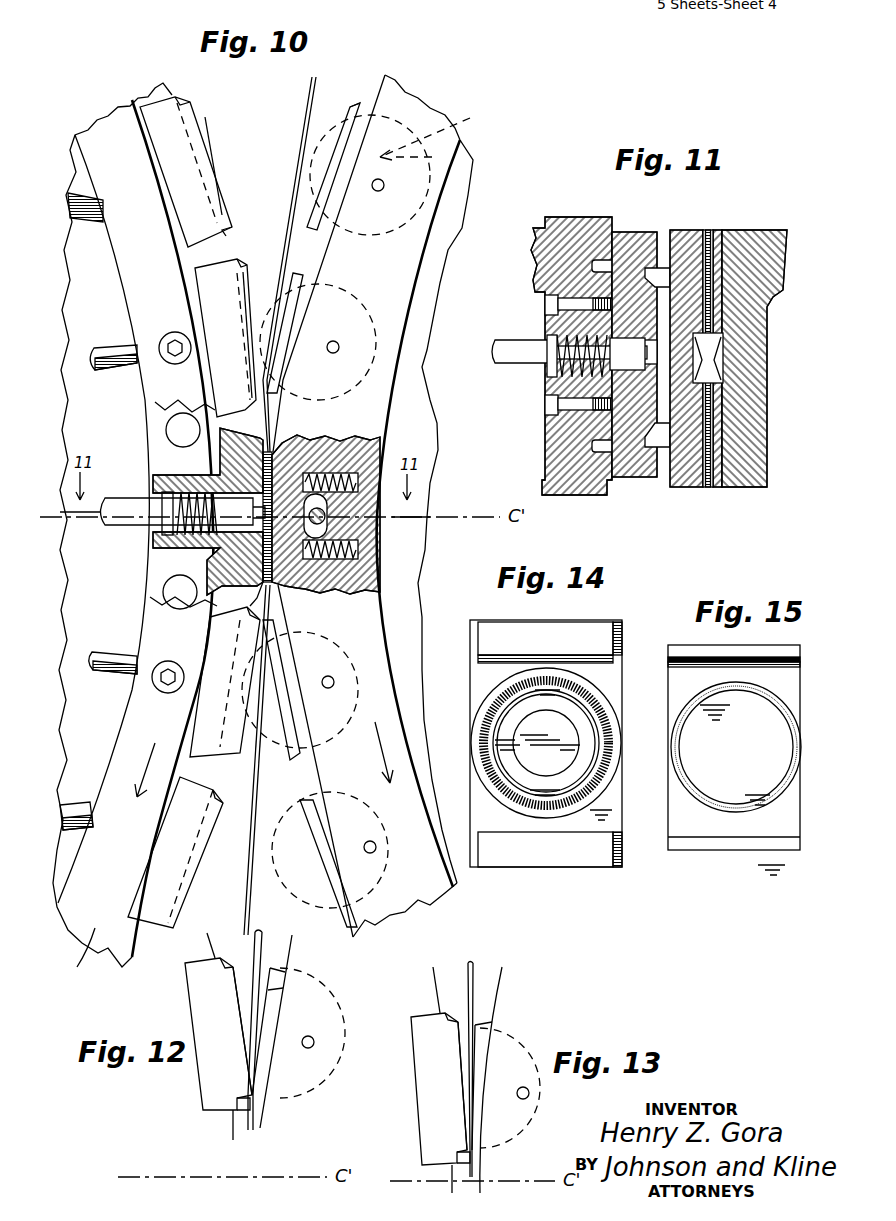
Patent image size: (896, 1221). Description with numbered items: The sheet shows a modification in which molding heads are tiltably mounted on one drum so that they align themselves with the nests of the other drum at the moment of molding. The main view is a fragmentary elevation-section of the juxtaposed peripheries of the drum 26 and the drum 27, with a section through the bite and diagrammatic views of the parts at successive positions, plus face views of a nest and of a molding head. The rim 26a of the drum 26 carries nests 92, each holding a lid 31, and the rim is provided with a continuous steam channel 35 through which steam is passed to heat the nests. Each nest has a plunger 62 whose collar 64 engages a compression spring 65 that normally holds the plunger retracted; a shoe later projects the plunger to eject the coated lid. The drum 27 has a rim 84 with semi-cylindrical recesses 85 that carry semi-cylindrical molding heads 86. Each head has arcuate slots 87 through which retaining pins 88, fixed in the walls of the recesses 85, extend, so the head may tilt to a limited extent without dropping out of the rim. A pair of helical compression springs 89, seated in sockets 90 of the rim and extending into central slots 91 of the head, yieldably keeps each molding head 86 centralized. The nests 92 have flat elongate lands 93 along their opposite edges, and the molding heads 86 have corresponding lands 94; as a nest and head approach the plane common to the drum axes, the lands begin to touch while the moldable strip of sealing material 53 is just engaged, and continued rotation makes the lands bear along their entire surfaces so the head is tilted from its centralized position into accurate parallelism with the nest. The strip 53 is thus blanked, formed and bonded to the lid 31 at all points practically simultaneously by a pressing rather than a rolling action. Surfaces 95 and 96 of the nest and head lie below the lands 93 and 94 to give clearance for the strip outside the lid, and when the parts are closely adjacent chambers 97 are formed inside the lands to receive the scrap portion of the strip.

In FIG. 10, the drum 26 is at (78, 366).
In FIG. 11, the drum 26 is at (532, 225).
In FIG. 12, the drum 26 is at (233, 1128).
In FIG. 13, the drum 26 is at (438, 985).
In FIG. 10, the rim 26a is at (73, 955).
In FIG. 11, the rim 26a is at (548, 467).
In FIG. 10, the drum 27 is at (412, 562).
In FIG. 11, the drum 27 is at (768, 230).
In FIG. 12, the drum 27 is at (265, 1117).
In FIG. 10, the lid 31 is at (254, 600).
In FIG. 11, the lid 31 is at (640, 445).
In FIG. 10, the steam channel 35 is at (183, 430).
In FIG. 10, the strip of sealing material 53 is at (300, 162).
In FIG. 12, the strip of sealing material 53 is at (256, 935).
In FIG. 10, the plunger 62 is at (115, 655).
In FIG. 11, the plunger 62 is at (515, 345).
In FIG. 10, the collar 64 is at (165, 487).
In FIG. 11, the collar 64 is at (547, 372).
In FIG. 10, the compression spring 65 is at (165, 545).
In FIG. 11, the compression spring 65 is at (555, 385).
In FIG. 10, the rim 84 is at (415, 912).
In FIG. 11, the rim 84 is at (750, 488).
In FIG. 13, the rim 84 is at (503, 985).
In FIG. 10, the semi-cylindrical recess 85 is at (460, 905).
In FIG. 10, the molding head 86 is at (358, 100).
In FIG. 11, the molding head 86 is at (689, 450).
In FIG. 15, the molding head 86 is at (812, 699).
In FIG. 12, the molding head 86 is at (272, 960).
In FIG. 13, the molding head 86 is at (480, 1022).
In FIG. 10, the arcuate slot 87 is at (323, 505).
In FIG. 10, the retaining pin 88 is at (384, 185).
In FIG. 11, the retaining pin 88 is at (710, 482).
In FIG. 12, the retaining pin 88 is at (315, 1042).
In FIG. 13, the retaining pin 88 is at (530, 1094).
In FIG. 10, the helical compression spring 89 is at (312, 470).
In FIG. 11, the helical compression spring 89 is at (716, 368).
In FIG. 10, the socket 90 is at (350, 463).
In FIG. 11, the central slot 91 is at (720, 378).
In FIG. 10, the nest 92 is at (185, 165).
In FIG. 14, the nest 92 is at (628, 653).
In FIG. 12, the nest 92 is at (205, 991).
In FIG. 13, the nest 92 is at (425, 1073).
In FIG. 10, the land 93 is at (205, 117).
In FIG. 11, the land 93 is at (628, 240).
In FIG. 14, the land 93 is at (573, 632).
In FIG. 12, the land 93 is at (240, 1000).
In FIG. 13, the land 93 is at (463, 1047).
In FIG. 10, the land 94 is at (340, 147).
In FIG. 15, the land 94 is at (783, 652).
In FIG. 12, the land 94 is at (270, 993).
In FIG. 13, the land 94 is at (478, 1055).
In FIG. 14, the surface 95 is at (610, 820).
In FIG. 15, the surface 96 is at (790, 805).
In FIG. 11, the chamber 97 is at (652, 268).